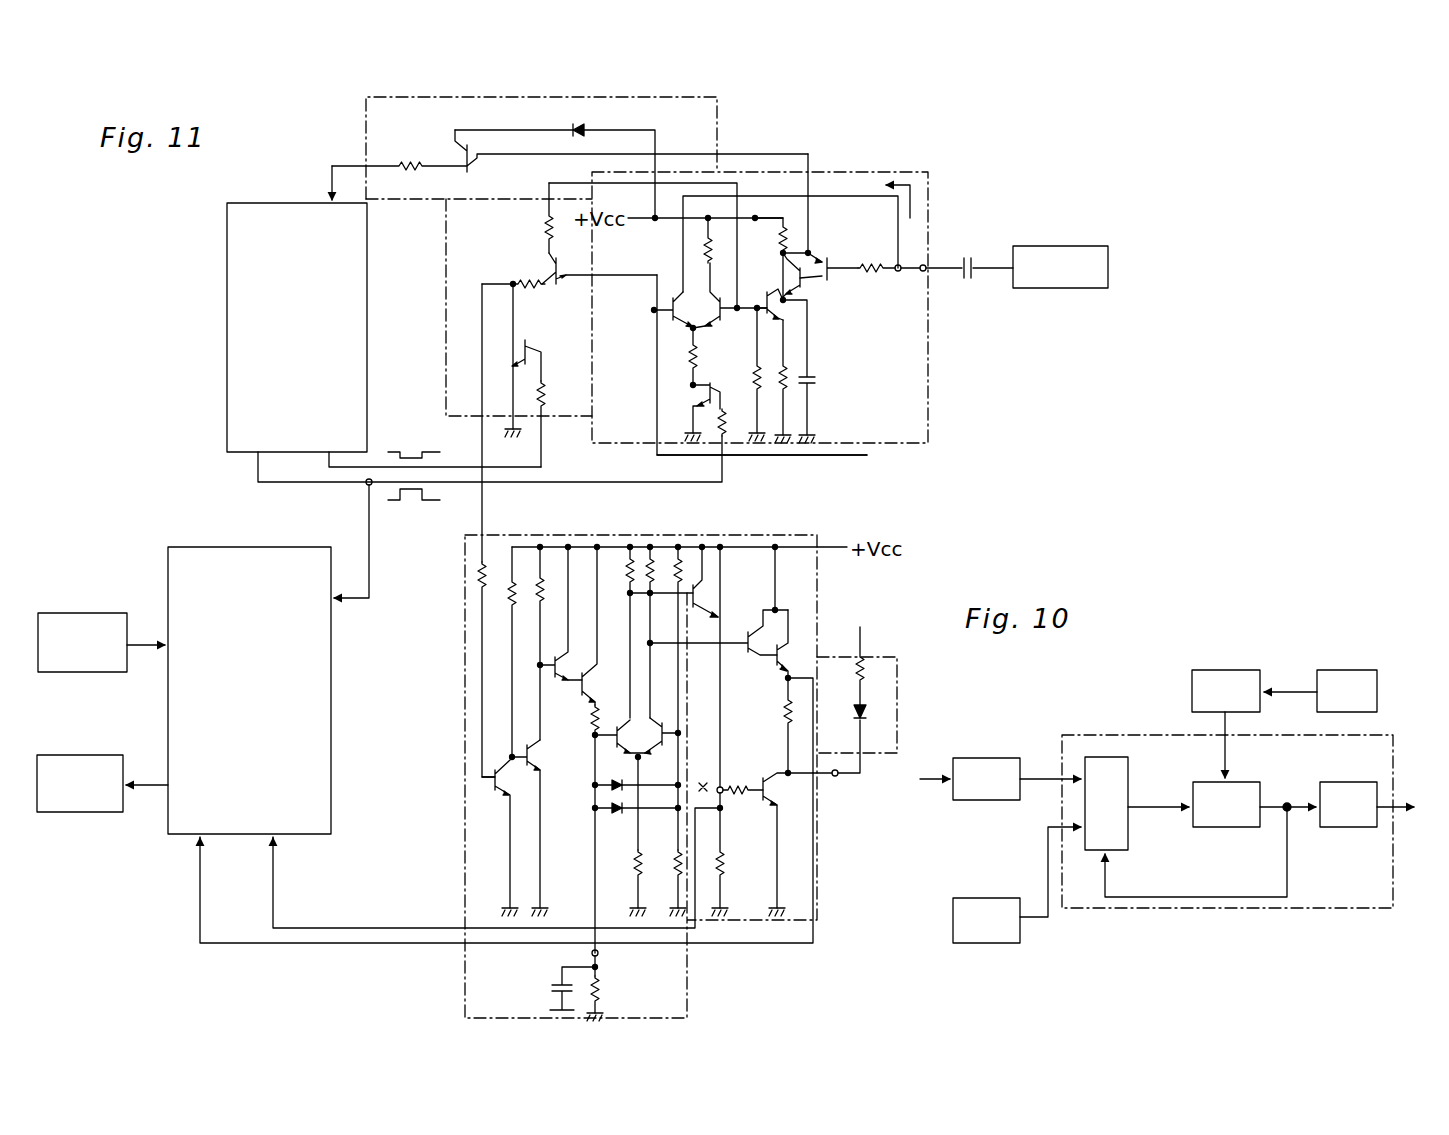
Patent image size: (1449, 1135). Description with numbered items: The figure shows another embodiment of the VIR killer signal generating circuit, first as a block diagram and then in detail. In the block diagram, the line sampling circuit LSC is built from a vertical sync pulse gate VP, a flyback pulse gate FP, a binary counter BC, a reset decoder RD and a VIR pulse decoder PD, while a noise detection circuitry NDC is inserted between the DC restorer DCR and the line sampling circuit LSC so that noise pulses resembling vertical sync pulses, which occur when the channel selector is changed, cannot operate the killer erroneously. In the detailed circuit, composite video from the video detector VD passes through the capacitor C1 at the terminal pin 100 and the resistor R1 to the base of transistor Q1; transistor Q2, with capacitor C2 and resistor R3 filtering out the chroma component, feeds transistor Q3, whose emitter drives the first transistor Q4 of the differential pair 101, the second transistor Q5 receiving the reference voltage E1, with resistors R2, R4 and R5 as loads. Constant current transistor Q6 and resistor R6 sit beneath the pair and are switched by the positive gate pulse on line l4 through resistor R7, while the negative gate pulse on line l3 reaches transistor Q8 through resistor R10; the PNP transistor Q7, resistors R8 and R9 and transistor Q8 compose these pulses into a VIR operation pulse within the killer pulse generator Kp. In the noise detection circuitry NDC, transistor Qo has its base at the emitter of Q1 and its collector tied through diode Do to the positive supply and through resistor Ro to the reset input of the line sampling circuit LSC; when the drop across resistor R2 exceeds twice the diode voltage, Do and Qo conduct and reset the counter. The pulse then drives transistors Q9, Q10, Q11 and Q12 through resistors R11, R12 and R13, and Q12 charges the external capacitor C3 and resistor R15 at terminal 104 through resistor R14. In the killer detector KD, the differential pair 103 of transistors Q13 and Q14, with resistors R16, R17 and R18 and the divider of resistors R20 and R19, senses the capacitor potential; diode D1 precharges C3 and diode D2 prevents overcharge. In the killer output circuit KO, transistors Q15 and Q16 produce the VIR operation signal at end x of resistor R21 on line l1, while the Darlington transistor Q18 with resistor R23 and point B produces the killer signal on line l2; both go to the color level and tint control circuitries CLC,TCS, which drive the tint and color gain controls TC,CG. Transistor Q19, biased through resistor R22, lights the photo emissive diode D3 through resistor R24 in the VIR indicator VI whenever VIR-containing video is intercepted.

In FIG. 11, the noise detection circuitry NDC is at (717, 142).
In FIG. 10, the noise detection circuitry NDC is at (1238, 670).
In FIG. 11, the D.C. restorer DCR is at (928, 190).
In FIG. 10, the D.C. restorer DCR is at (1345, 670).
In FIG. 11, the line sampling circuit LSC is at (227, 267).
In FIG. 11, the VIR killer pulse generator Kp is at (479, 307).
In FIG. 11, the resistor Ro is at (399, 166).
In FIG. 11, the transistor Qo is at (630, 164).
In FIG. 11, the diode Do is at (600, 124).
In FIG. 11, the resistor R8 is at (531, 218).
In FIG. 11, the PNP type transistor Q7 is at (735, 656).
In FIG. 11, the resistor R9 is at (514, 276).
In FIG. 11, the transistor Q8 is at (532, 348).
In FIG. 11, the resistor R10 is at (563, 424).
In FIG. 11, the line l3 is at (448, 466).
In FIG. 11, the line l4 is at (452, 484).
In FIG. 11, the first transistor Q4 is at (670, 300).
In FIG. 11, the second transistor Q5 is at (700, 315).
In FIG. 11, the differential pair 101 is at (732, 338).
In FIG. 11, the resistor R5 is at (702, 249).
In FIG. 11, the resistor R6 is at (688, 358).
In FIG. 11, the constant current transistor Q6 is at (698, 392).
In FIG. 11, the resistor R7 is at (725, 422).
In FIG. 11, the resistor R4 is at (754, 374).
In FIG. 11, the resistor R2 is at (790, 238).
In FIG. 11, the transistor Q1 is at (820, 217).
In FIG. 11, the transistor Q2 is at (803, 285).
In FIG. 11, the transistor Q3 is at (770, 310).
In FIG. 11, the resistor R3 is at (788, 372).
In FIG. 11, the capacitor C2 is at (815, 382).
In FIG. 11, the resistor R1 is at (871, 274).
In FIG. 11, the terminal pin 100 is at (924, 272).
In FIG. 11, the capacitor C1 is at (969, 281).
In FIG. 11, the video detector VD is at (1108, 278).
In FIG. 11, the constant reference voltage E1 is at (778, 456).
In FIG. 11, the automatic color level control signal generating circuitry and tint control signa CLC,TCS is at (331, 816).
In FIG. 11, the tint and color gain control TC,CG is at (76, 813).
In FIG. 11, the line l1 is at (427, 927).
In FIG. 11, the line l2 is at (408, 944).
In FIG. 11, the VIR killer detector KD is at (463, 885).
In FIG. 11, the killer output circuit KO is at (793, 923).
In FIG. 11, the resistor R11 is at (480, 575).
In FIG. 11, the resistor R12 is at (510, 599).
In FIG. 11, the resistor R13 is at (539, 576).
In FIG. 11, the resistor R16 is at (628, 567).
In FIG. 11, the resistor R17 is at (652, 561).
In FIG. 11, the resistor R20 is at (682, 559).
In FIG. 11, the transistor Q11 is at (552, 665).
In FIG. 11, the transistor Q12 is at (580, 684).
In FIG. 11, the resistor R14 is at (594, 712).
In FIG. 11, the transistor Q13 is at (616, 739).
In FIG. 11, the transistor Q14 is at (668, 730).
In FIG. 11, the differential pair 103 is at (634, 734).
In FIG. 11, the transistor Q9 is at (495, 780).
In FIG. 11, the emitter-grounded transistor Q10 is at (527, 755).
In FIG. 11, the diode D1 is at (593, 785).
In FIG. 11, the diode D2 is at (593, 809).
In FIG. 11, the resistor R18 is at (632, 870).
In FIG. 11, the resistor R19 is at (682, 864).
In FIG. 11, the resistor R21 is at (723, 862).
In FIG. 11, the transistor Q16 is at (712, 604).
In FIG. 11, the transistor Q15 is at (696, 622).
In FIG. 11, the transistor Q18 is at (786, 654).
In FIG. 11, the point B is at (788, 724).
In FIG. 11, the resistor R23 is at (786, 702).
In FIG. 11, the resistor R22 is at (740, 787).
In FIG. 11, the end X of resistor R21 x is at (711, 788).
In FIG. 11, the transistor Q19 is at (778, 790).
In FIG. 11, the VIR indicator VI is at (897, 718).
In FIG. 11, the resistor R24 is at (864, 662).
In FIG. 11, the photo emissive diode D3 is at (848, 724).
In FIG. 11, the terminal pin 104 is at (598, 953).
In FIG. 11, the capacitor C3 is at (550, 989).
In FIG. 11, the resistor R15 is at (602, 990).
In FIG. 10, the vertical sync pulse gate circuit VP is at (986, 758).
In FIG. 10, the flyback pulse gate circuit FP is at (986, 898).
In FIG. 10, the 5-bit binary counter BC is at (1128, 840).
In FIG. 10, the reset decoder RD is at (1220, 827).
In FIG. 10, the VIR pulse decoder PD is at (1350, 827).